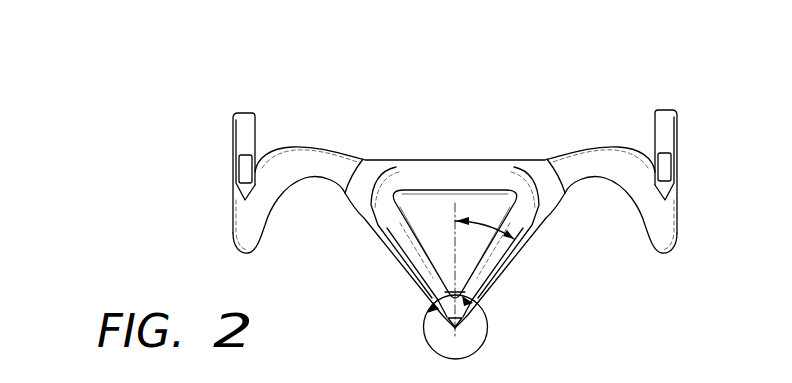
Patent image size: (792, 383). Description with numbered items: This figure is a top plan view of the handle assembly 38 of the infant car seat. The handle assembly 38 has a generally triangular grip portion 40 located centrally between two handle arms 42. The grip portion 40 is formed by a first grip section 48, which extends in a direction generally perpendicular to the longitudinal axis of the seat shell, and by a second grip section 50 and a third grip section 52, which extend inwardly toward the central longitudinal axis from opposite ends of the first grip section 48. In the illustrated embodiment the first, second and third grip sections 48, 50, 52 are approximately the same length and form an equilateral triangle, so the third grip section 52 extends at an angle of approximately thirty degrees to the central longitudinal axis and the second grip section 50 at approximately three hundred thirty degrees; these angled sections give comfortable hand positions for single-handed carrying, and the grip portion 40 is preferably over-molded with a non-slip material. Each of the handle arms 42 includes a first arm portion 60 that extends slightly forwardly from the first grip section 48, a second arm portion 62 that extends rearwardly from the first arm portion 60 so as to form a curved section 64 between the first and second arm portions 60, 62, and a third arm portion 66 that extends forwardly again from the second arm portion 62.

The handle assembly 38 is at (459, 218).
The grip portion 40 is at (477, 122).
The handle arms 42 is at (268, 280).
The first grip section 48 is at (461, 224).
The second grip section 50 is at (393, 252).
The third grip section 52 is at (518, 255).
The first arm portion 60 is at (335, 158).
The second arm portion 62 is at (266, 210).
The curved section 64 is at (302, 148).
The third arm portion 66 is at (233, 164).